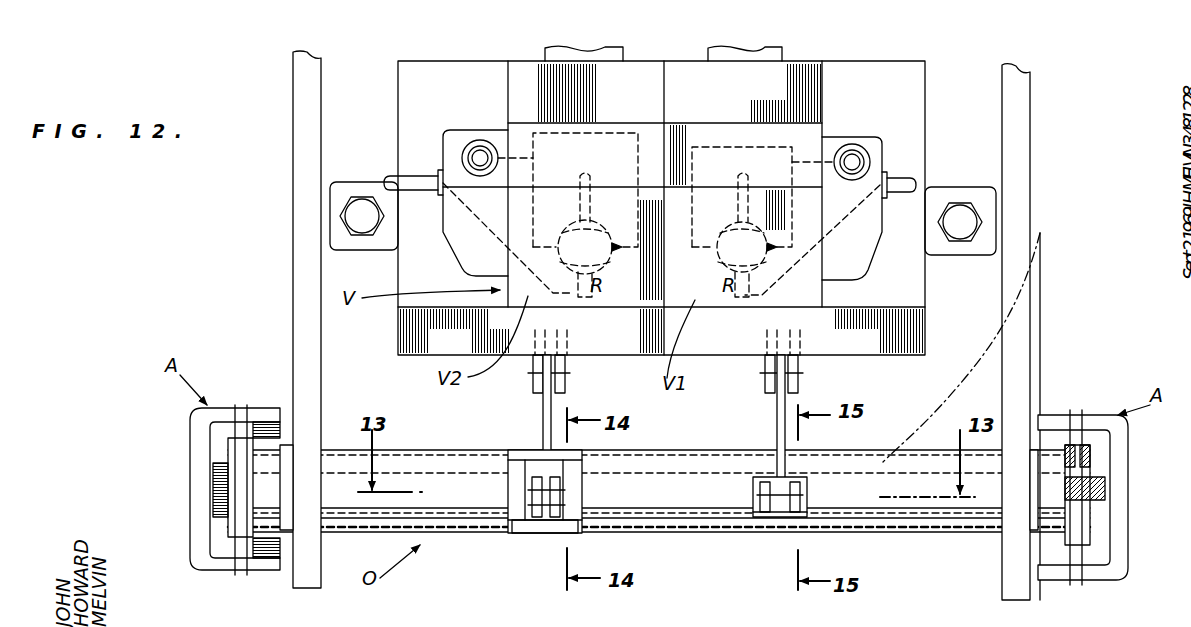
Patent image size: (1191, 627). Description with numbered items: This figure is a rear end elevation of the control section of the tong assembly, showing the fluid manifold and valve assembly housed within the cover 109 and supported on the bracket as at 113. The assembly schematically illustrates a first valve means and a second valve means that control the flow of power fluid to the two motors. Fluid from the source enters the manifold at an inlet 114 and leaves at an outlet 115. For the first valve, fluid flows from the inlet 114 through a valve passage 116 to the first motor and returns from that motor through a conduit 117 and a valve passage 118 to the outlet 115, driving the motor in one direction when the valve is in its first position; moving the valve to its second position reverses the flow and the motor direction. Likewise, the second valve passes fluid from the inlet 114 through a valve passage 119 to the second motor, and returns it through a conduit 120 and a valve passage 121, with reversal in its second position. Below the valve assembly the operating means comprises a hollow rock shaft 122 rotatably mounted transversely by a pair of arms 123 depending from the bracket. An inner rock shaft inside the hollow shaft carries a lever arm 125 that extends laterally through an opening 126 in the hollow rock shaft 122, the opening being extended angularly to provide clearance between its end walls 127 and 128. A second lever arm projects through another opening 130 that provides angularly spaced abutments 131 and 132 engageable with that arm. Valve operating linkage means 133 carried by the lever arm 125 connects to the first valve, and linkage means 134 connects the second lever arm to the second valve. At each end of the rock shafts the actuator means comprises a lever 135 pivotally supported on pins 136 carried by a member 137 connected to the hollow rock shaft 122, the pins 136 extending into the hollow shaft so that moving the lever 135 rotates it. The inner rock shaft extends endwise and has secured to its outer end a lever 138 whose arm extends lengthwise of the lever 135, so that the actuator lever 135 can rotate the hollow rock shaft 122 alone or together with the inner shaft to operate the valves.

The cover 109 is at (1043, 318).
The support 113 is at (350, 190).
The inlet 114 is at (853, 148).
The outlet 115 is at (478, 140).
The valve passage 116 is at (745, 178).
The conduit 117 is at (898, 172).
The valve passage 118 is at (745, 300).
The valve passage 119 is at (588, 178).
The conduit 120 is at (413, 175).
The valve passage 121 is at (578, 297).
The rock shaft 122 is at (900, 535).
The arms 123 is at (296, 235).
The lever arm 125 is at (532, 520).
The opening 126 is at (510, 490).
The end wall 127 is at (578, 470).
The end wall 128 is at (565, 512).
The opening 130 is at (808, 500).
The abutment 131 is at (800, 478).
The abutment 132 is at (765, 518).
The valve operating linkage means 133 is at (540, 413).
The linkage means 134 is at (777, 432).
The lever 135 is at (198, 442).
The pins 136 is at (240, 408).
The member 137 is at (233, 505).
The lever 138 is at (218, 492).